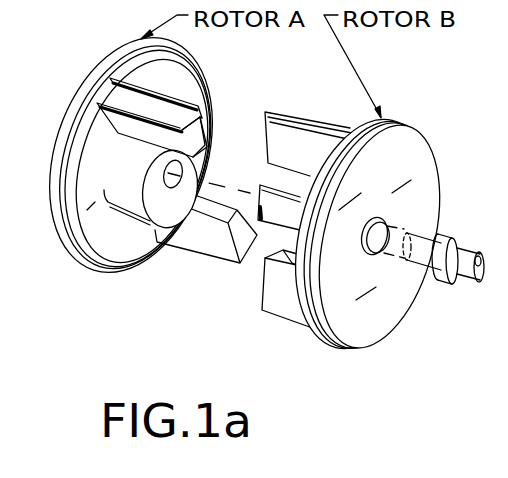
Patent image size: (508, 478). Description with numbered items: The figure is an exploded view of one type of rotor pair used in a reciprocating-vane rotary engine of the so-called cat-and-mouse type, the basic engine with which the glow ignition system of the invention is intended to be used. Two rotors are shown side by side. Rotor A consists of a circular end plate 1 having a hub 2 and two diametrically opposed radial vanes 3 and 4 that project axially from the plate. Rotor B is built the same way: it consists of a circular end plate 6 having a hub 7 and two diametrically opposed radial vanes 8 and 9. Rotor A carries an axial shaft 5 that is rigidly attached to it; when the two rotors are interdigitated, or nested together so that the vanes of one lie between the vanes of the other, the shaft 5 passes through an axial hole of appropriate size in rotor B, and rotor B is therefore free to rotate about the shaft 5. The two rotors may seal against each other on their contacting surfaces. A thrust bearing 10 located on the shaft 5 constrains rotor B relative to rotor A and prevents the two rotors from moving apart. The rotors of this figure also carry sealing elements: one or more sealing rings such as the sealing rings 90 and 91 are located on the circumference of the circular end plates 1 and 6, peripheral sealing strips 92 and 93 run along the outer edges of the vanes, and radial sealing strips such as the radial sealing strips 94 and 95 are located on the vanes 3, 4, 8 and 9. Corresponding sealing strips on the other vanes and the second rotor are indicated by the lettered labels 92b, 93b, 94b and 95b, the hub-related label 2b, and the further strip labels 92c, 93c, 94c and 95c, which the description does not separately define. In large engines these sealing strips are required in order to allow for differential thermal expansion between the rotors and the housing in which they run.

The circular end plate 1 is at (63, 248).
The hub 2 is at (124, 190).
The radial vane 3 is at (196, 256).
The radial vane 4 is at (165, 88).
The axial shaft 5 is at (428, 268).
The circular end plate 6 is at (348, 346).
The hub 7 is at (292, 250).
The radial vane 8 is at (287, 320).
The radial vane 9 is at (289, 100).
The thrust bearing 10 is at (439, 267).
The sealing ring 90 is at (128, 62).
The sealing ring 91 is at (118, 82).
The peripheral sealing strip 92 is at (122, 90).
The peripheral sealing strip 93 is at (128, 118).
The radial sealing strip 94 is at (203, 104).
The radial sealing strip 95 is at (205, 142).
The magnet layer (rotor B) 92b is at (507, 63).
The magnet layer (rotor B) 93b is at (507, 93).
The magnet end face edge (rotor B) 94b is at (488, 124).
The magnet end face (rotor B) 95b is at (491, 152).
The rotor B face plate 2b is at (495, 180).
The magnet layer (lower) 92c is at (507, 397).
The magnet layer (lower) 93c is at (504, 423).
The magnet end face edge (lower) 94c is at (504, 448).
The magnet end face (lower) 95c is at (468, 472).